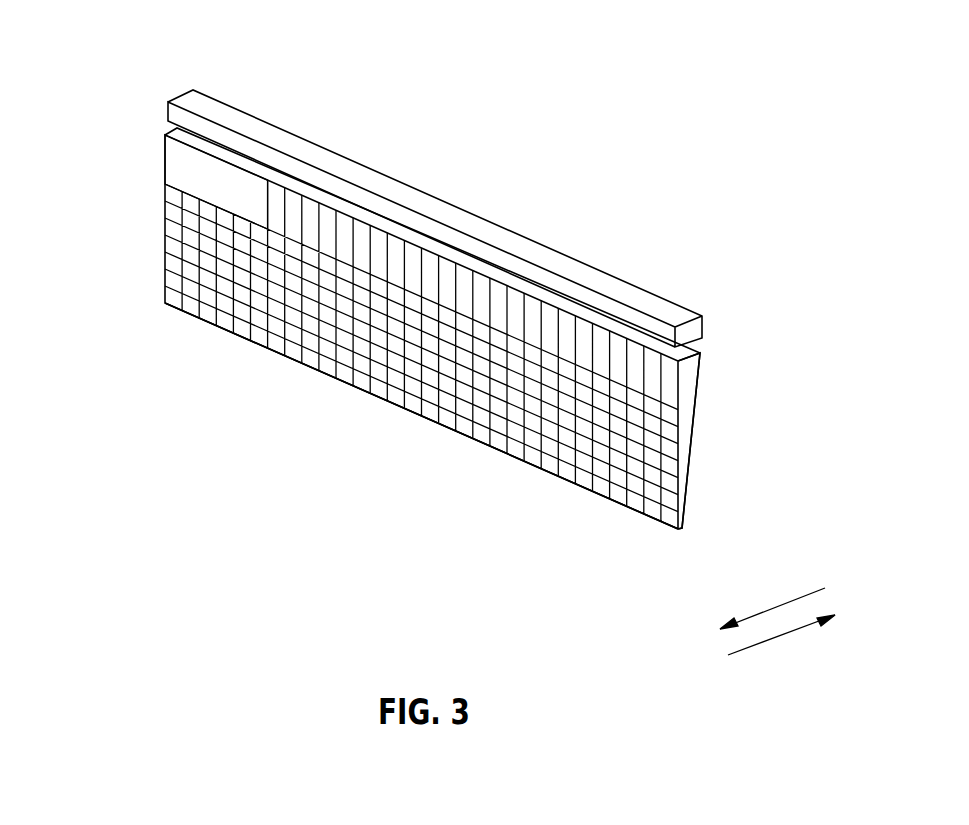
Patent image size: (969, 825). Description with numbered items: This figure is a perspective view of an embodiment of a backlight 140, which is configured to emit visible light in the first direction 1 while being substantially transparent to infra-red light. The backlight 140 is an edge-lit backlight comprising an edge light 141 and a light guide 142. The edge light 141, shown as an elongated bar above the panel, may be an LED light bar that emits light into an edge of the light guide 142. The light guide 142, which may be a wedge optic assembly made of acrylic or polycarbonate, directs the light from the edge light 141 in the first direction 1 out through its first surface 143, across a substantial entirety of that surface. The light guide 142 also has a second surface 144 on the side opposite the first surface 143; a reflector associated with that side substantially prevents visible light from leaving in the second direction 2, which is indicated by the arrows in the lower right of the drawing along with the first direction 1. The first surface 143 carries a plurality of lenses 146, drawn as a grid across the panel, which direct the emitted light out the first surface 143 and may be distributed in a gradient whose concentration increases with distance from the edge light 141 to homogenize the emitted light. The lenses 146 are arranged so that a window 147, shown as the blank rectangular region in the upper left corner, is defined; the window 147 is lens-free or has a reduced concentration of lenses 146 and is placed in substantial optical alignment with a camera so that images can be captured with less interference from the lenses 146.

The backlight 140 is at (167, 92).
The edge light 141 is at (692, 327).
The light guide 142 is at (687, 418).
The first surface 143 is at (653, 495).
The second surface 144 is at (690, 477).
The lenses 146 is at (172, 308).
The window 147 is at (177, 165).
The first direction 1 is at (763, 618).
The second direction 2 is at (789, 625).